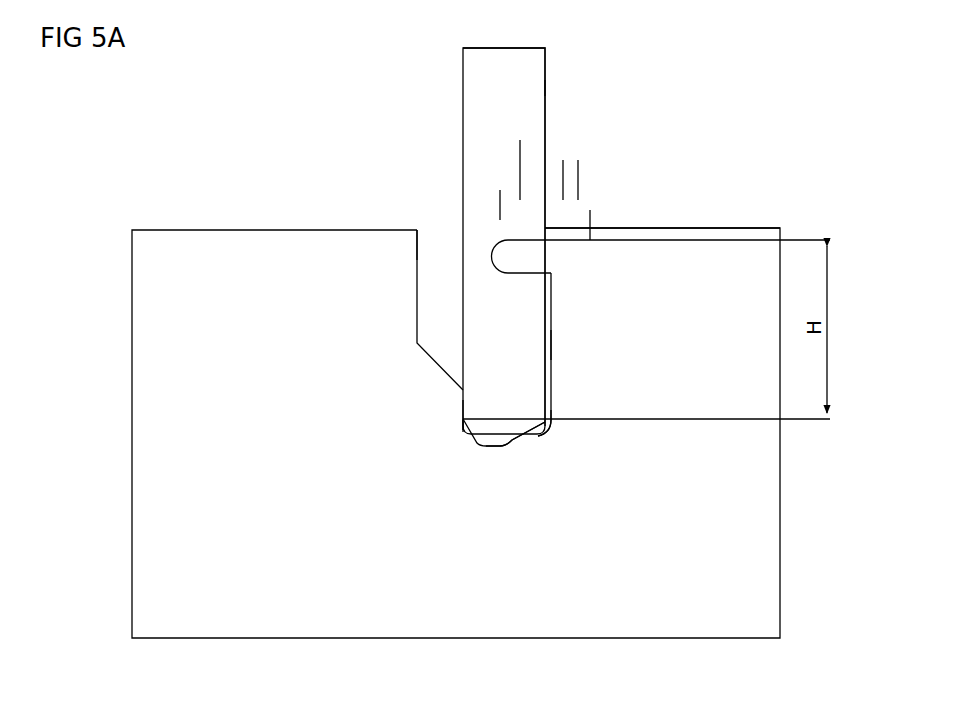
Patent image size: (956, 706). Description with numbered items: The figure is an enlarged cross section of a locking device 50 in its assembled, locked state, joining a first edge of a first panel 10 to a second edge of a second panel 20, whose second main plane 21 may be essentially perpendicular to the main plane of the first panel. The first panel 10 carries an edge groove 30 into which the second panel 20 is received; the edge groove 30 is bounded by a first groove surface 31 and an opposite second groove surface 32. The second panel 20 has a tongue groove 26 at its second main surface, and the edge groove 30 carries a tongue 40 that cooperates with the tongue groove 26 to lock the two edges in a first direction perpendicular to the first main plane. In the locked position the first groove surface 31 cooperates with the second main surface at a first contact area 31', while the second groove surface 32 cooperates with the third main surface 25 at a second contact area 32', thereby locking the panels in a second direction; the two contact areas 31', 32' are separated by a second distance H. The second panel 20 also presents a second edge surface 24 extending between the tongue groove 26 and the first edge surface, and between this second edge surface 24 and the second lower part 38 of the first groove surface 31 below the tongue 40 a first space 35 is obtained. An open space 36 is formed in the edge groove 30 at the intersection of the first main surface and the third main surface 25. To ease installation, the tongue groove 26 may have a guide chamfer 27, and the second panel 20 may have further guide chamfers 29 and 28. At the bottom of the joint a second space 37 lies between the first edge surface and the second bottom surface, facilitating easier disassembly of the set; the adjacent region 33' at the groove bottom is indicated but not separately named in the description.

The first panel 10 is at (722, 603).
The second panel 20 is at (497, 128).
The second main plane 21 is at (545, 88).
The second edge surface 24 is at (553, 372).
The third main surface 25 is at (463, 75).
The tongue groove 26 is at (577, 258).
The guide chamfer 27 is at (540, 243).
The guide chamfer 28 is at (545, 425).
The guide chamfer 29 is at (488, 440).
The edge groove 30 is at (442, 225).
The first groove surface 31 is at (608, 154).
The first contact area 31' is at (617, 169).
The second groove surface 32 is at (498, 371).
The second contact area 32' is at (405, 428).
The bottom edge 33' is at (567, 514).
The first space 35 is at (553, 425).
The open space 36 is at (445, 262).
The second space 37 is at (505, 440).
The second lower part 38 is at (553, 402).
The tongue 40 is at (527, 252).
The locking device 50 is at (528, 230).